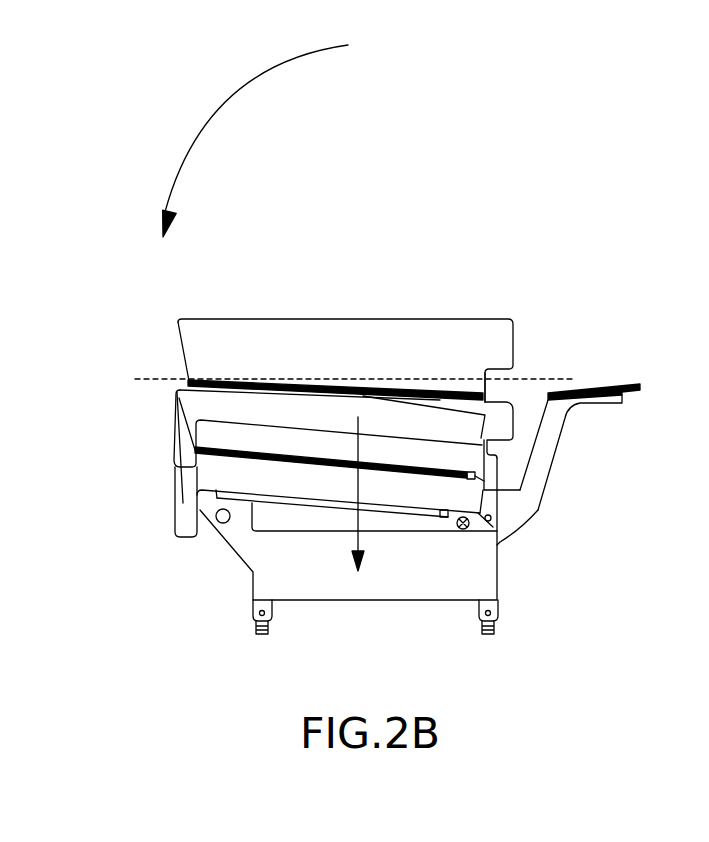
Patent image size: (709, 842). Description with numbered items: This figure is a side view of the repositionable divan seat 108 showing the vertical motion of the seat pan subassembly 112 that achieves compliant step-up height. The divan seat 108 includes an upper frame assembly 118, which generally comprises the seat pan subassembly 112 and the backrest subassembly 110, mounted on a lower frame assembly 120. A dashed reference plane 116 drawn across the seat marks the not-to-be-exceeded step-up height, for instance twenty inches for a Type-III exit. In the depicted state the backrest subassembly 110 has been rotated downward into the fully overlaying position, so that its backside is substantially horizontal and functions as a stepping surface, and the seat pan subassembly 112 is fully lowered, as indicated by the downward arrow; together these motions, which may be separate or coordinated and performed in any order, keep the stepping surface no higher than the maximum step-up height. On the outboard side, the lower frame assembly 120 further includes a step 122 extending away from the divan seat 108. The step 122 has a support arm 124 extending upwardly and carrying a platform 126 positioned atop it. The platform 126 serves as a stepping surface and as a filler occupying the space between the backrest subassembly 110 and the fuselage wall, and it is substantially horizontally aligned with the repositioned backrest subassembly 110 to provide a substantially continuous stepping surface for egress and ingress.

The divan seat 108 is at (516, 277).
The backrest subassembly 110 is at (192, 420).
The seat pan subassembly 112 is at (183, 500).
The reference plane 116 is at (150, 378).
The upper frame assembly 118 is at (520, 394).
The lower frame assembly 120 is at (502, 533).
The step 122 is at (594, 430).
The support arm 124 is at (549, 458).
The platform 126 is at (602, 388).